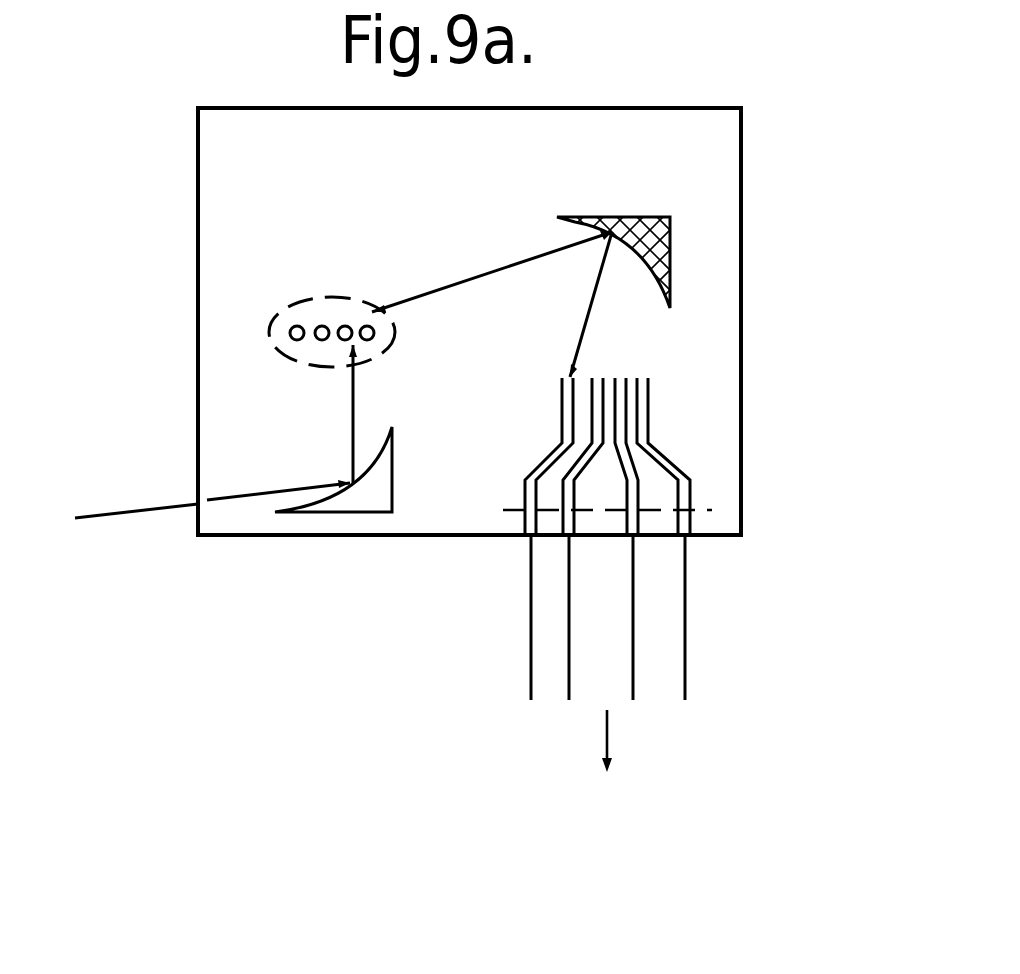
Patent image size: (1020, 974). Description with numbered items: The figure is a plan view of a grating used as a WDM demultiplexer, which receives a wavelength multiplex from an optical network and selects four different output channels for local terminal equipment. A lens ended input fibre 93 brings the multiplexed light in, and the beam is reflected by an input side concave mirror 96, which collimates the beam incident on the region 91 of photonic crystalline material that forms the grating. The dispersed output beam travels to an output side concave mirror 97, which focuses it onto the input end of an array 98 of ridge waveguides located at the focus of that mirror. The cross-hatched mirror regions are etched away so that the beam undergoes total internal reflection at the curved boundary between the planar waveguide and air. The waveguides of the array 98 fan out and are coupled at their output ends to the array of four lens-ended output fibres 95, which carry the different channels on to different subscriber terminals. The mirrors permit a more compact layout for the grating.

The region of photonic crystalline material 91 is at (270, 340).
The lens ended input fibre 93 is at (140, 517).
The lens-ended output fibres 95 is at (689, 643).
The input side concave mirror 96 is at (367, 514).
The output side concave mirror 97 is at (668, 248).
The array of ridge waveguides 98 is at (655, 412).